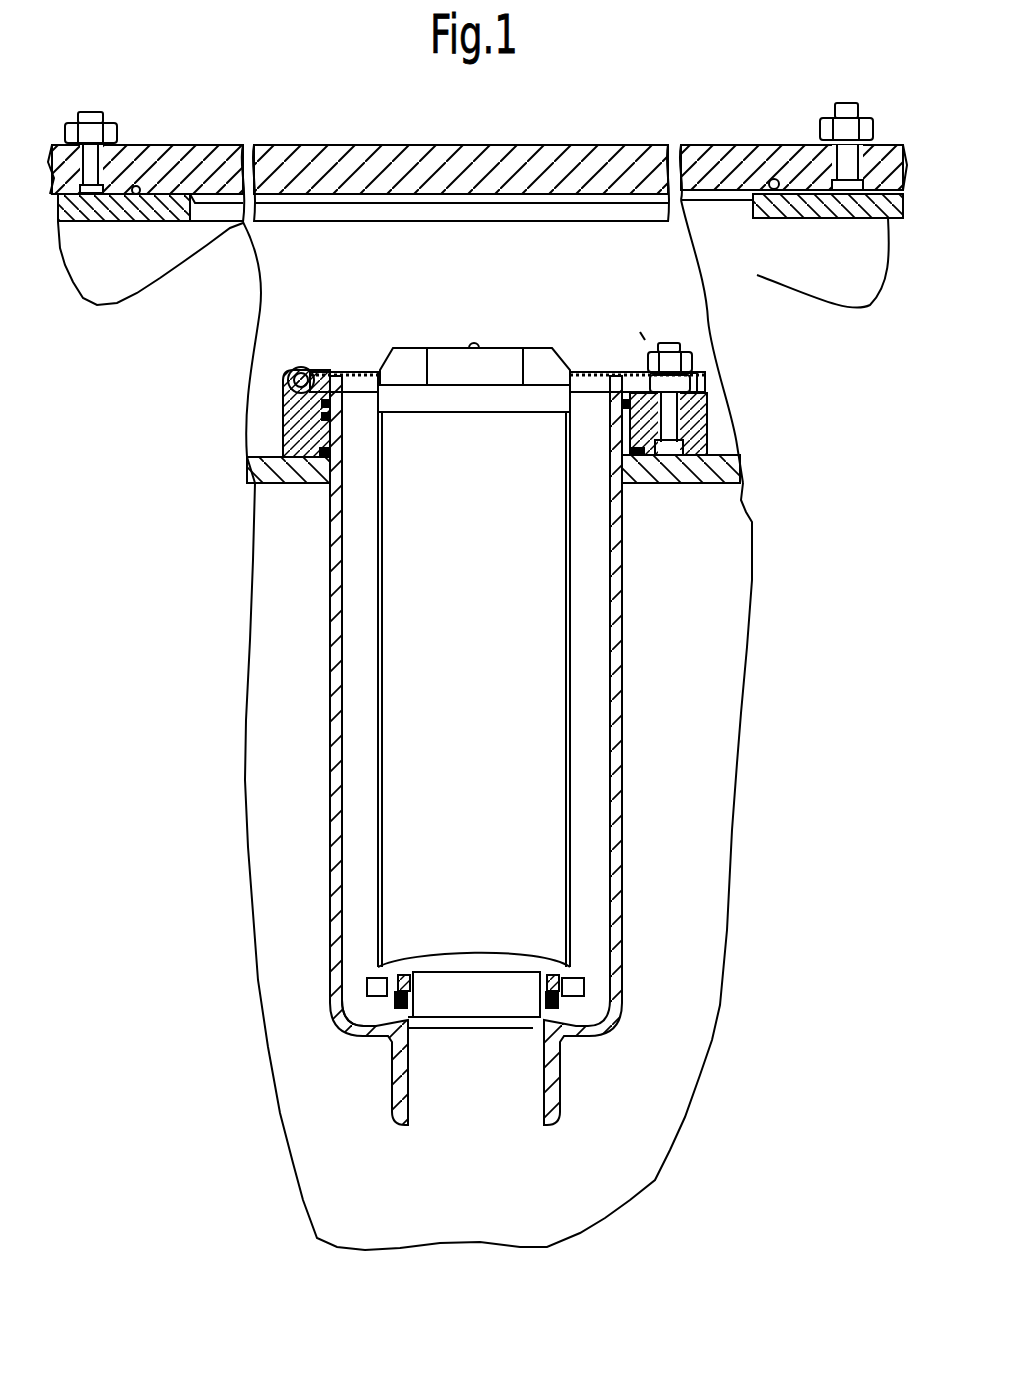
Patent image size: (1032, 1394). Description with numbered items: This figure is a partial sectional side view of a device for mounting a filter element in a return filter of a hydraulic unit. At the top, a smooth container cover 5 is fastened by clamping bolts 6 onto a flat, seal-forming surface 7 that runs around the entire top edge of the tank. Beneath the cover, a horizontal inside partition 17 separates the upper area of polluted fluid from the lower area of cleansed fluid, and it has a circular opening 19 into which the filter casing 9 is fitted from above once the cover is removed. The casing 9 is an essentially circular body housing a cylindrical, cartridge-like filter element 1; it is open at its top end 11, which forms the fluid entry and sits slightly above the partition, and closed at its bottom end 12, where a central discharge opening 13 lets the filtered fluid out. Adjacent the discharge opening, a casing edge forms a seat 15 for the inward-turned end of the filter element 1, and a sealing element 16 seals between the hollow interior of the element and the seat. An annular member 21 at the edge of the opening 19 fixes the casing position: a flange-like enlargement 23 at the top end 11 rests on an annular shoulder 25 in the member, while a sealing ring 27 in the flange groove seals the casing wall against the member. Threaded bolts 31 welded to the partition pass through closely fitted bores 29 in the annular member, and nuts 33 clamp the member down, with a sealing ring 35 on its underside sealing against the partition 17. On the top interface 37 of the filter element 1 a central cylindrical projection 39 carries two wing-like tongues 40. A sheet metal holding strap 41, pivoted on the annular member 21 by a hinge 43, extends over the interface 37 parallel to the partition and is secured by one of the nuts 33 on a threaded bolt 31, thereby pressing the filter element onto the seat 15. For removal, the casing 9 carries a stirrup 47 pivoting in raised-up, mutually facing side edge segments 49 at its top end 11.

The filter element 1 is at (568, 810).
The container cover 5 is at (601, 162).
The clamping bolts 6 is at (103, 113).
The seal-forming surface 7 is at (136, 194).
The filter casing 9 is at (625, 653).
The top end 11 is at (583, 402).
The bottom end 12 is at (346, 1003).
The discharge opening 13 is at (535, 995).
The seat 15 is at (416, 993).
The sealing element 16 is at (392, 1062).
The inside partition 17 is at (268, 470).
The opening 19 is at (622, 490).
The annular member 21 is at (700, 417).
The flange-like enlargement 23 is at (283, 404).
The annular shoulder 25 is at (320, 425).
The sealing ring 27 is at (612, 378).
The bores 29 is at (692, 365).
The threaded bolts 31 is at (670, 430).
The nuts 33 is at (712, 395).
The sealing ring 35 is at (292, 478).
The top interface 37 is at (390, 400).
The projection 39 is at (447, 365).
The tongues 40 is at (403, 363).
The holding strap 41 is at (640, 332).
The hinge 43 is at (290, 368).
The stirrup 47 is at (300, 366).
The side edge segments 49 is at (477, 346).